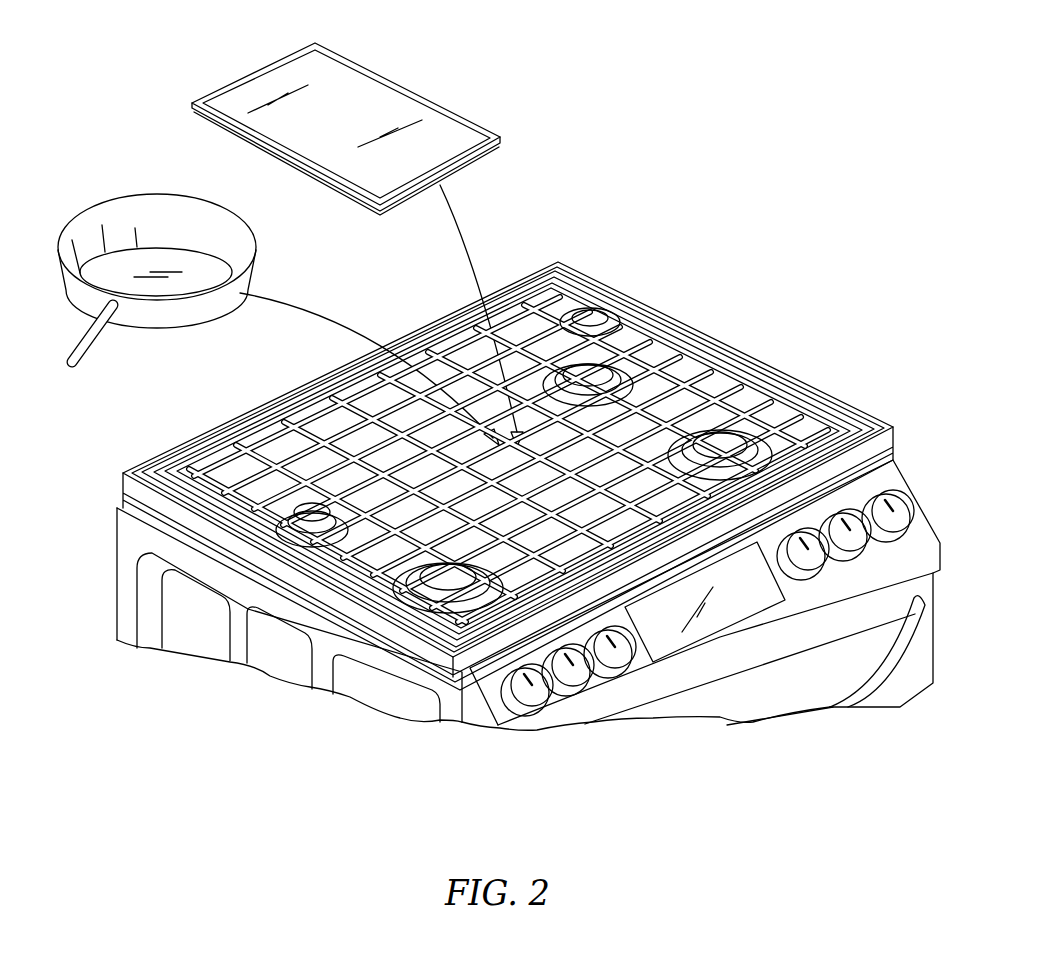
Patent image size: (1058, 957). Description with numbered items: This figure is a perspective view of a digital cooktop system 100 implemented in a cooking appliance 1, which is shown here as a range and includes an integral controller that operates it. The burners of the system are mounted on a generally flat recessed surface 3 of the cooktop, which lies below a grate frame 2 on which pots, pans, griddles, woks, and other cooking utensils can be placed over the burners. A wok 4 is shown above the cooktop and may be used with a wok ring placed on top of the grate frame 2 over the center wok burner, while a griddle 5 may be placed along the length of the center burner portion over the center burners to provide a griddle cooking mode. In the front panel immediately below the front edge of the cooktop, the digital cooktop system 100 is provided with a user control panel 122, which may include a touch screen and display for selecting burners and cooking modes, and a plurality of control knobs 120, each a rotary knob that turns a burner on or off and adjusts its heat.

The cooking appliance 1 is at (112, 594).
The grate frame 2 is at (508, 459).
The recessed surface 3 is at (701, 414).
The wok 4 is at (127, 208).
The griddle 5 is at (373, 93).
The digital cooktop system 100 is at (538, 519).
The control knob 120 is at (922, 494).
The user control panel 122 is at (712, 626).